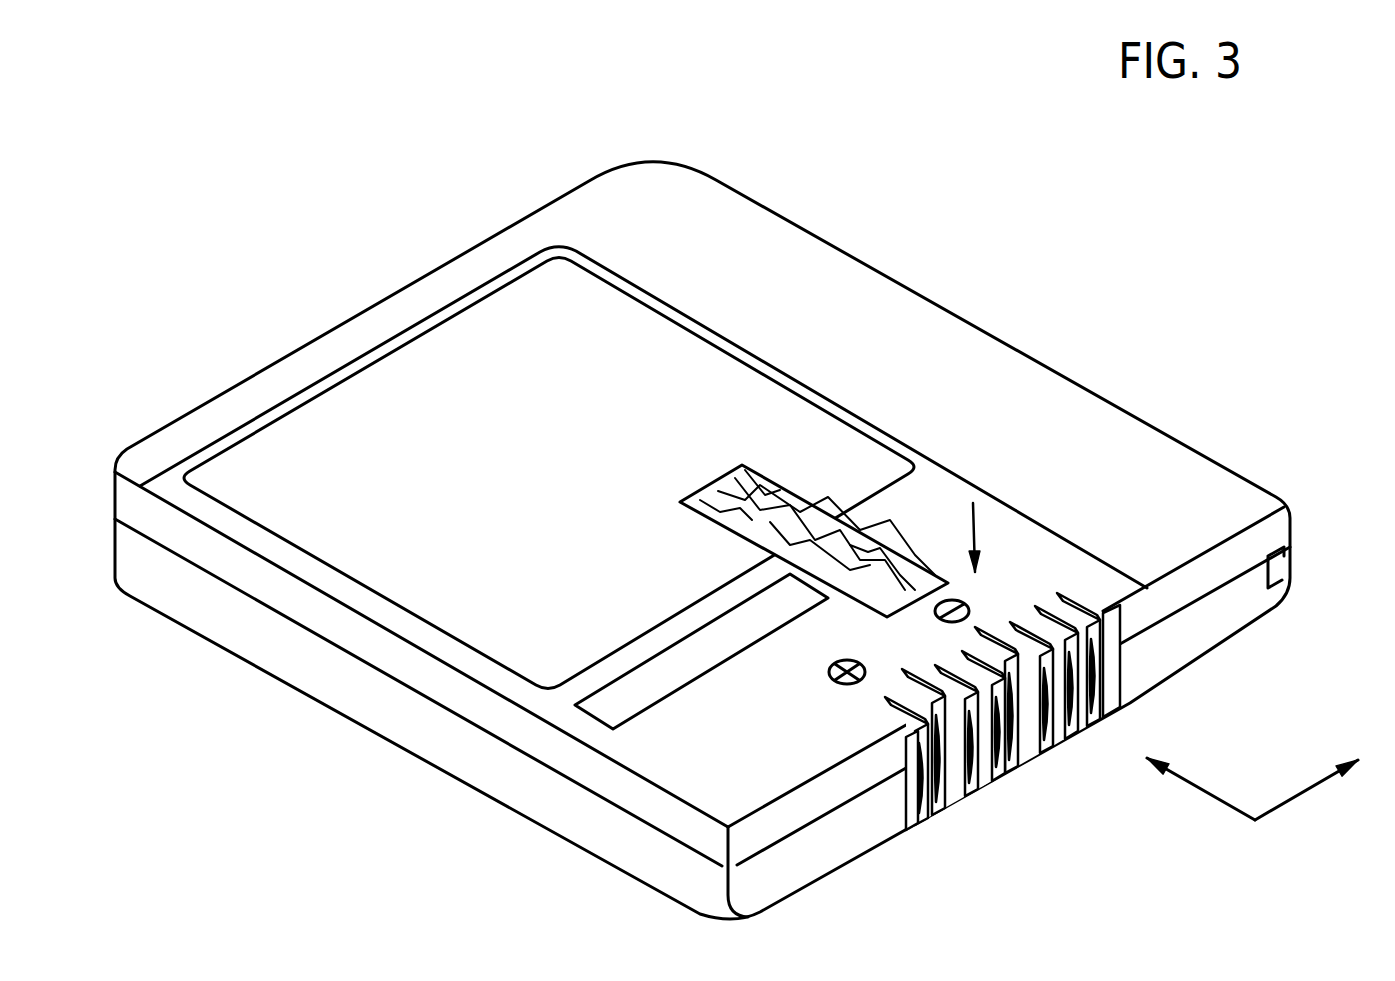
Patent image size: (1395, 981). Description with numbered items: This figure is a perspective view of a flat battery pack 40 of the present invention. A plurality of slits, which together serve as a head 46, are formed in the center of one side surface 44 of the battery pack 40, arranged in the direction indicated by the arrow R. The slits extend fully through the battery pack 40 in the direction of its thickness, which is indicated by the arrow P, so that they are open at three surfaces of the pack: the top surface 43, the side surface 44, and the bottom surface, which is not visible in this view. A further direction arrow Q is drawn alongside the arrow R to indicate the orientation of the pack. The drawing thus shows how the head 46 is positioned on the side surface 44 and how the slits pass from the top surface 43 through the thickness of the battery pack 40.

The flat battery pack 40 is at (940, 257).
The top surface 43 is at (1052, 558).
The side surface 44 is at (1250, 607).
The head 46 is at (1022, 785).
The arrow P is at (977, 525).
The arrow Q is at (1203, 793).
The arrow R is at (1282, 807).